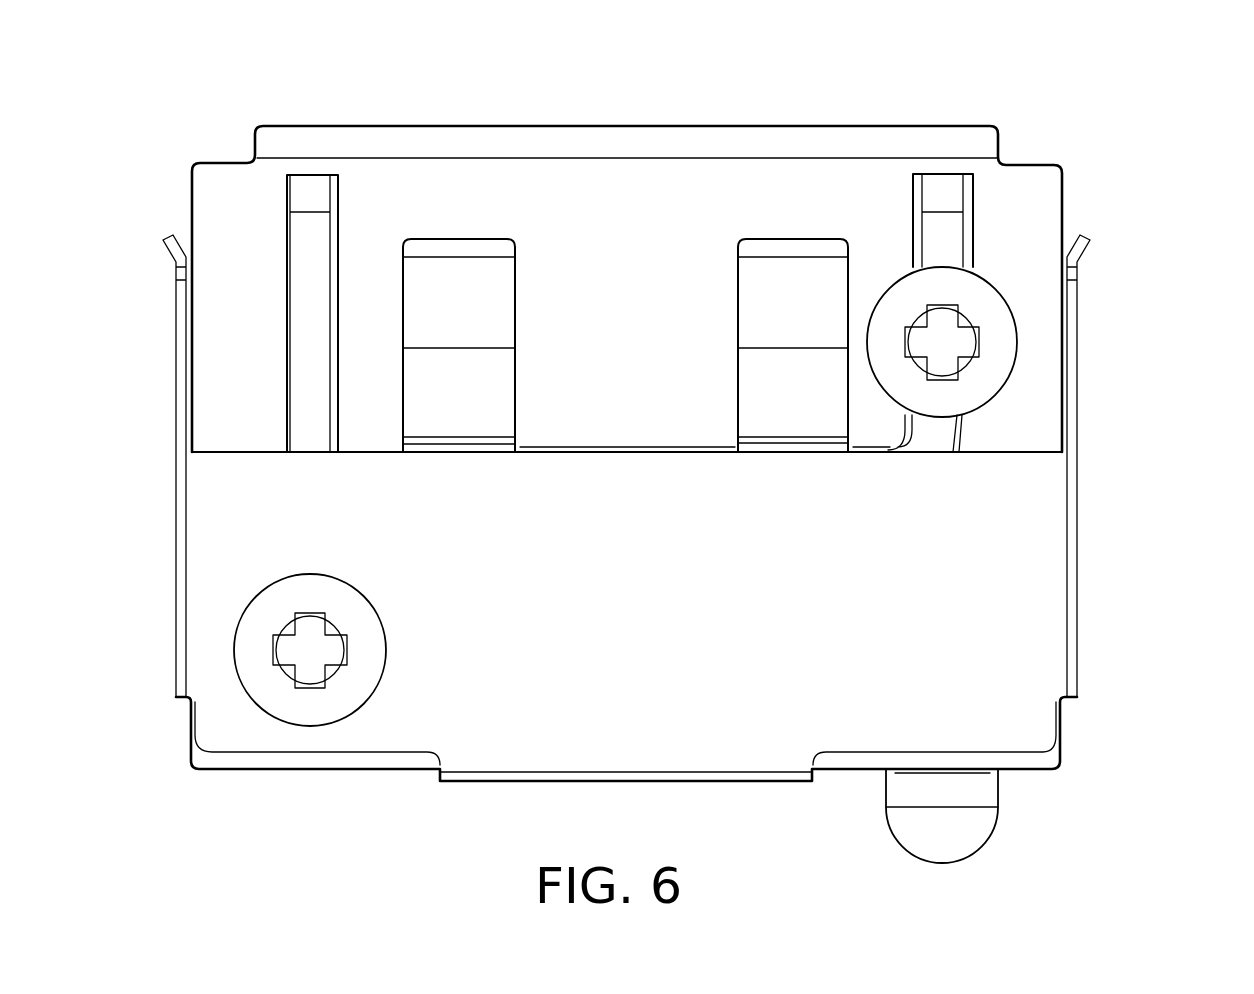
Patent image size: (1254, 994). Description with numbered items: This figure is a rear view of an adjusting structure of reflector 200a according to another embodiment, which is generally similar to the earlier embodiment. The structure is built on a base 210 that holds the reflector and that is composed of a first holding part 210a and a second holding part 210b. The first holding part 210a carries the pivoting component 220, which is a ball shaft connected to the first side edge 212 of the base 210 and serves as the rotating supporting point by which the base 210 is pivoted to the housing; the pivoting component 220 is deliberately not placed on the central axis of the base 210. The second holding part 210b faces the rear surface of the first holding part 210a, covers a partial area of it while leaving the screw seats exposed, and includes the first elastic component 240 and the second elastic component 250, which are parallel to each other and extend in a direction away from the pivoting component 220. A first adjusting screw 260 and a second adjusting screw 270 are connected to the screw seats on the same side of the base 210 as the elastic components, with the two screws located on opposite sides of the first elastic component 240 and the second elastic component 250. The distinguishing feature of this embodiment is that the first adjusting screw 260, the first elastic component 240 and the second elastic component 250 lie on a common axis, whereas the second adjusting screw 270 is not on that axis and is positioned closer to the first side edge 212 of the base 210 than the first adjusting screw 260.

The adjusting structure of reflector 200a is at (687, 453).
The base 210 is at (687, 453).
The first holding part 210a is at (671, 246).
The second holding part 210b is at (687, 550).
The first side edge 212 is at (247, 769).
The pivoting component 220 is at (975, 830).
The first elastic component 240 is at (808, 270).
The second elastic component 250 is at (489, 283).
The first adjusting screw 260 is at (985, 298).
The second adjusting screw 270 is at (318, 712).